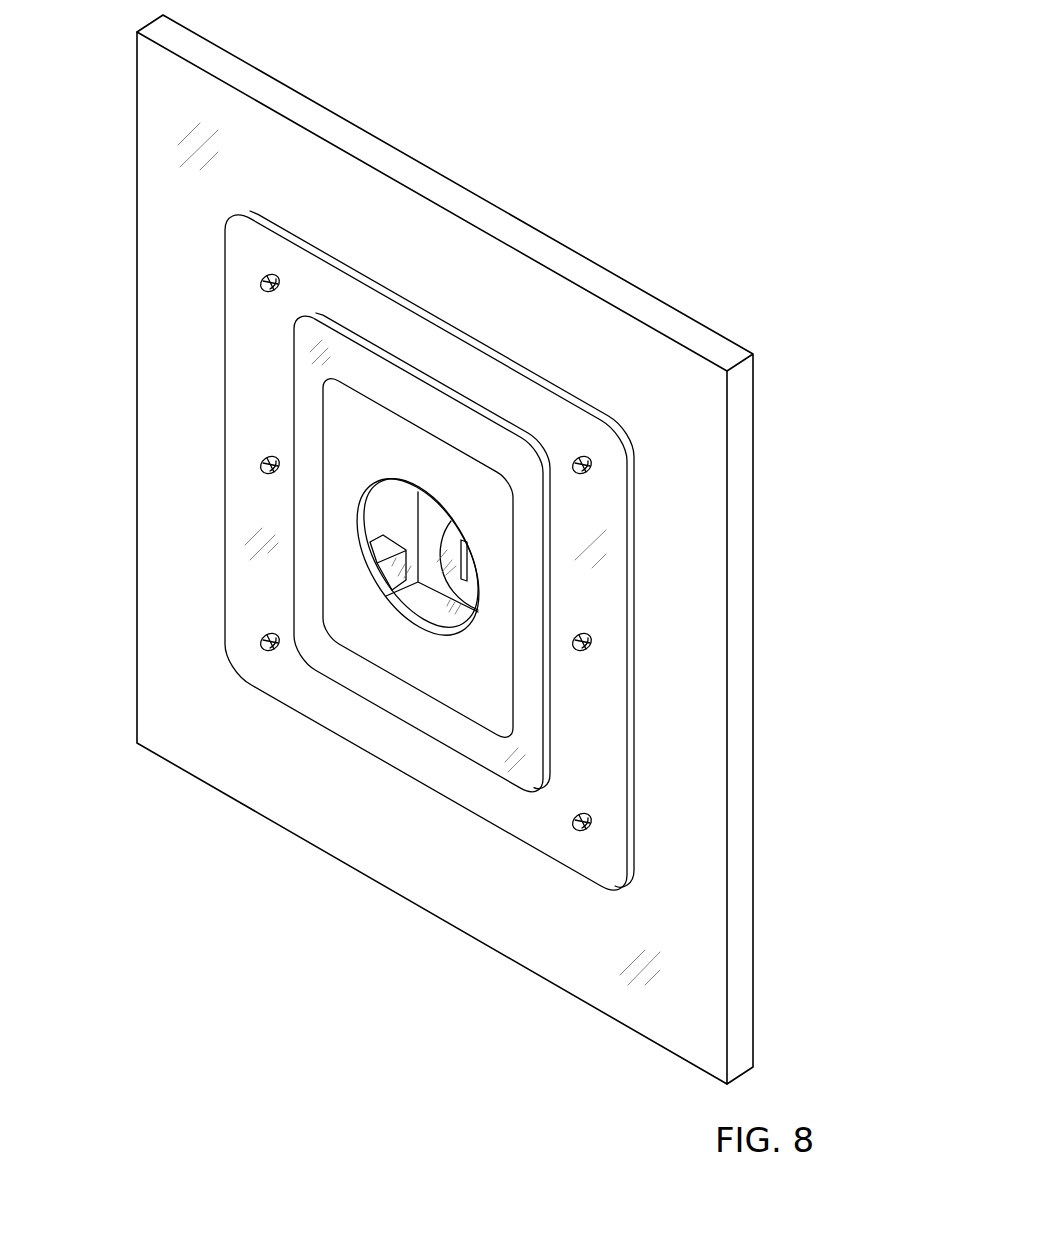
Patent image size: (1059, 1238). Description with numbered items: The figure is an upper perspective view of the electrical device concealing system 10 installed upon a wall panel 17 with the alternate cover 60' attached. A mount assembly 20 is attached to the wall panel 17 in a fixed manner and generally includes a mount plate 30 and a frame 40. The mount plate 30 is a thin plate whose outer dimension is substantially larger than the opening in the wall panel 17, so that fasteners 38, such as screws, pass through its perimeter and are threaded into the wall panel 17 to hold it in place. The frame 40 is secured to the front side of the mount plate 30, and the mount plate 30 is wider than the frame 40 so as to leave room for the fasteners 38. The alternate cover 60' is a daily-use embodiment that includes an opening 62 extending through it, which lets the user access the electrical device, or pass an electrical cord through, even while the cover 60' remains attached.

The electrical device concealing system 10 is at (623, 120).
The wall panel 17 is at (677, 309).
The mount assembly 20 is at (387, 297).
The mount plate 30 is at (225, 330).
The fasteners 38 is at (262, 463).
The frame 40 is at (383, 715).
The alternate cover 60' is at (308, 636).
The opening 62 is at (468, 633).